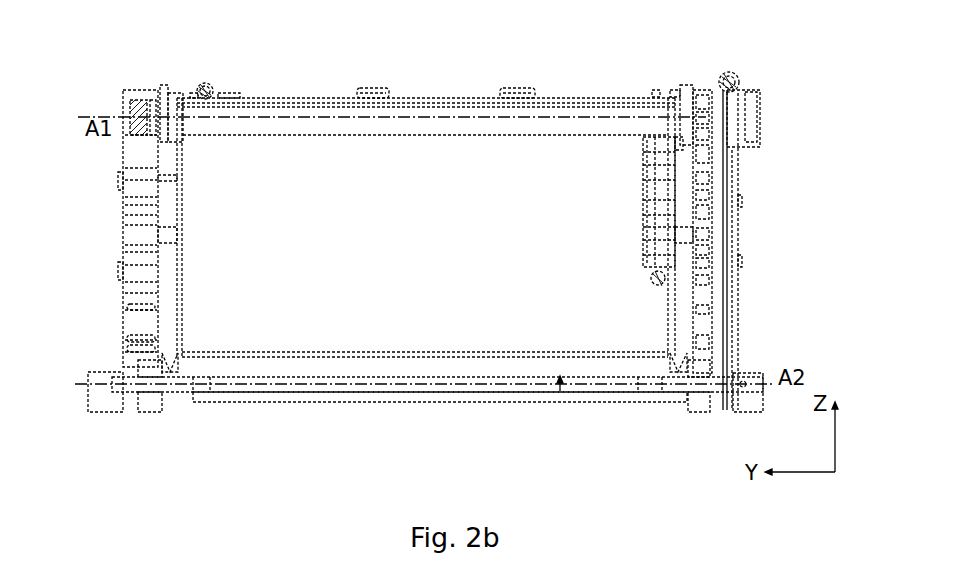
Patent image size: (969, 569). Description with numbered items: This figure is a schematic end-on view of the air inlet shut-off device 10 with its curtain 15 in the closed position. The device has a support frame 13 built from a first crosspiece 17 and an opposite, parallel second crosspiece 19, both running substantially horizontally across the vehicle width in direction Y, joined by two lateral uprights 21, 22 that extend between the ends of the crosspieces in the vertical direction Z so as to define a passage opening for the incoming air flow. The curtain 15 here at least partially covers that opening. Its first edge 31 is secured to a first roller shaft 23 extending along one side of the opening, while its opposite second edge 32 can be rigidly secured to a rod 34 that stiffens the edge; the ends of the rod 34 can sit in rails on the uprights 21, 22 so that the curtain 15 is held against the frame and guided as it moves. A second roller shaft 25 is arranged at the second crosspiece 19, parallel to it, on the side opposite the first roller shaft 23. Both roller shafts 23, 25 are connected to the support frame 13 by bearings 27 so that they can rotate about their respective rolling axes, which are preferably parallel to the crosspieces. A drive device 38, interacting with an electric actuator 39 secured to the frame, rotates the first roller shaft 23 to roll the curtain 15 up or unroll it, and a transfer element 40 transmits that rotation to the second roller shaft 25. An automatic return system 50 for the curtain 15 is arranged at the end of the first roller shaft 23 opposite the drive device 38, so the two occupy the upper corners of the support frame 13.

The air inlet shut-off device 10 is at (402, 83).
The support frame 13 is at (108, 217).
The curtain 15 is at (285, 104).
The first crosspiece 17 is at (746, 86).
The second crosspiece 19 is at (252, 396).
The lateral upright 21 is at (130, 332).
The lateral upright 22 is at (735, 306).
The first roller shaft 23 is at (150, 100).
The second roller shaft 25 is at (222, 385).
The bearings 27 is at (166, 95).
The first edge 31 is at (440, 97).
The second edge 32 is at (561, 395).
The rod 34 is at (684, 366).
The drive device 38 is at (698, 90).
The electric actuator 39 is at (648, 185).
The transfer element 40 is at (738, 213).
The automatic return system 50 is at (101, 90).